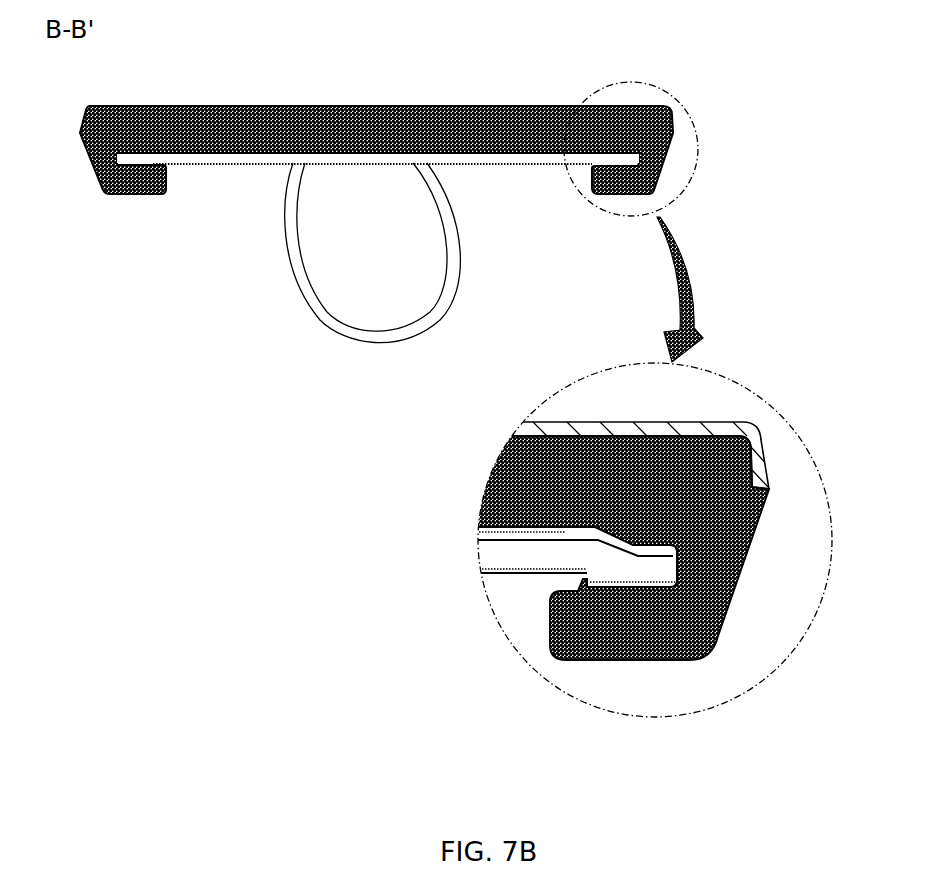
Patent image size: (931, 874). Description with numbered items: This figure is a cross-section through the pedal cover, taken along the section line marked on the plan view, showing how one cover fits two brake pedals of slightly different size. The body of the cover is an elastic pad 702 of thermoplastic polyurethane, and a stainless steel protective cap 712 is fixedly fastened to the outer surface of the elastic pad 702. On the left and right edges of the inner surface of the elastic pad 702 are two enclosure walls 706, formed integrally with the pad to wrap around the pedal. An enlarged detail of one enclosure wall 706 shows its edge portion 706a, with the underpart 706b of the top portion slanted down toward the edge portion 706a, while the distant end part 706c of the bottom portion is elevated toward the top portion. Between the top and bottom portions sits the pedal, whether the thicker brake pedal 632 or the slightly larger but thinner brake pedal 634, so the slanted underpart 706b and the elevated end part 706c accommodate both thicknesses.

The elastic pad 702 is at (431, 105).
The protective cap 712 is at (748, 421).
The enclosure wall 706 is at (672, 175).
The edge portion 706a is at (733, 552).
The underpart of the top portion 706b is at (625, 518).
The distant end part of the bottom portion 706c is at (550, 596).
The brake pedal for Model 3 and Model Y 632 is at (209, 165).
The brake pedal for Model Y Juniper 634 is at (491, 165).